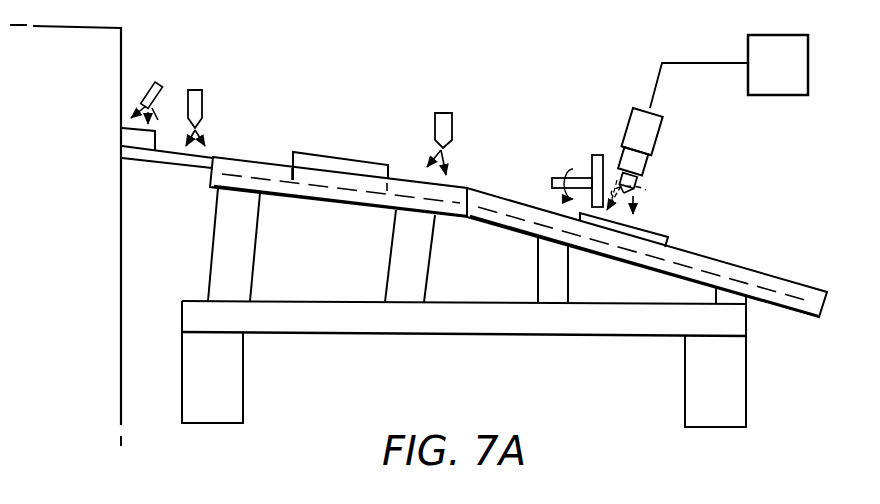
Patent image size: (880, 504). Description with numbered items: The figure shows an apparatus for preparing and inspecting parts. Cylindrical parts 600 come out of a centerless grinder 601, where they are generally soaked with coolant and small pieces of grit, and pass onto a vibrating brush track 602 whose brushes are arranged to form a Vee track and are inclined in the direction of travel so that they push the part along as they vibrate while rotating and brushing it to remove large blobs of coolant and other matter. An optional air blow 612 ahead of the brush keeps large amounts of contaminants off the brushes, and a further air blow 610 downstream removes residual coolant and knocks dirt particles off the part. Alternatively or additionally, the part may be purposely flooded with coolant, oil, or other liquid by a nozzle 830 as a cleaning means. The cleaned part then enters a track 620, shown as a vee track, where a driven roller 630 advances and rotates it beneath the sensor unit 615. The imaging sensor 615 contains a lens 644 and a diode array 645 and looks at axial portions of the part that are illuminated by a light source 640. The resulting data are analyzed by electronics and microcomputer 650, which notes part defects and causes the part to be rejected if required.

The cylindrical parts 600 is at (320, 152).
The centerless grinder 601 is at (91, 110).
The vibrating brush track 602 is at (313, 189).
The air blow 610 is at (444, 112).
The optional air blow 612 is at (194, 91).
The sensor unit 615 is at (661, 131).
The vee track 620 is at (743, 268).
The driven roller 630 is at (597, 153).
The light source 640 is at (640, 163).
The lens 644 is at (648, 193).
The diode array 645 is at (663, 112).
The electronics and microcomputer 650 is at (800, 72).
The nozzle 830 is at (160, 84).